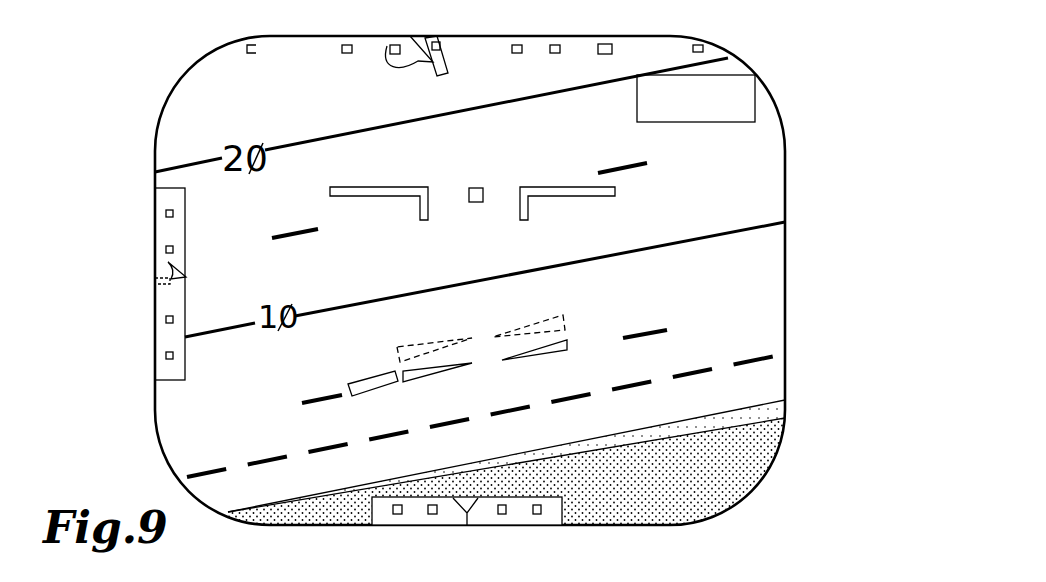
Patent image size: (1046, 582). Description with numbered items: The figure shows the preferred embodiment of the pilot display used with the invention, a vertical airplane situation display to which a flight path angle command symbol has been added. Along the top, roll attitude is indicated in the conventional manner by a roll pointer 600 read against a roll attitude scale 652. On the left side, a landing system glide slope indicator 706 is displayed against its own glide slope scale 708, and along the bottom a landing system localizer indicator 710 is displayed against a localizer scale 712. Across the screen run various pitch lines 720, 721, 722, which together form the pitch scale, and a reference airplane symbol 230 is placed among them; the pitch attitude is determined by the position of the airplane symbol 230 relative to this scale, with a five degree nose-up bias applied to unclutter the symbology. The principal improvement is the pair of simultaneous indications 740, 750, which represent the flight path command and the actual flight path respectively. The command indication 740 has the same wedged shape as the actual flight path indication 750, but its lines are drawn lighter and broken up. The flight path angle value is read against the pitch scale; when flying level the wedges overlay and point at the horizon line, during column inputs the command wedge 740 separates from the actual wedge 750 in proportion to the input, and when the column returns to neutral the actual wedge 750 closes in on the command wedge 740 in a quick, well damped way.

The roll pointer 600 is at (387, 46).
The roll attitude scale 652 is at (582, 32).
The pitch line 722 is at (286, 147).
The pitch line 721 is at (281, 233).
The reference airplane symbol 230 is at (503, 254).
The landing system glide slope indicator 706 is at (166, 263).
The glide slope scale 708 is at (146, 324).
The pitch line 720 is at (328, 309).
The flight path command indication 740 is at (407, 346).
The actual flight path indication 750 is at (423, 377).
The localizer scale 712 is at (447, 558).
The landing system localizer indicator 710 is at (478, 505).